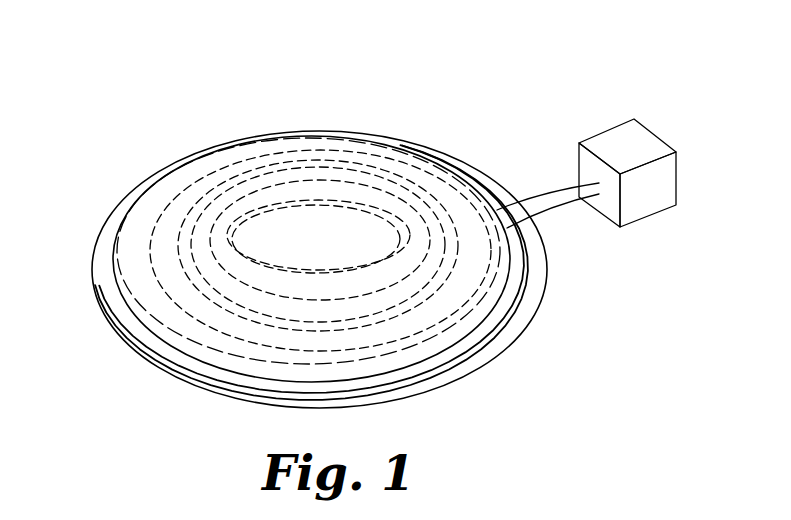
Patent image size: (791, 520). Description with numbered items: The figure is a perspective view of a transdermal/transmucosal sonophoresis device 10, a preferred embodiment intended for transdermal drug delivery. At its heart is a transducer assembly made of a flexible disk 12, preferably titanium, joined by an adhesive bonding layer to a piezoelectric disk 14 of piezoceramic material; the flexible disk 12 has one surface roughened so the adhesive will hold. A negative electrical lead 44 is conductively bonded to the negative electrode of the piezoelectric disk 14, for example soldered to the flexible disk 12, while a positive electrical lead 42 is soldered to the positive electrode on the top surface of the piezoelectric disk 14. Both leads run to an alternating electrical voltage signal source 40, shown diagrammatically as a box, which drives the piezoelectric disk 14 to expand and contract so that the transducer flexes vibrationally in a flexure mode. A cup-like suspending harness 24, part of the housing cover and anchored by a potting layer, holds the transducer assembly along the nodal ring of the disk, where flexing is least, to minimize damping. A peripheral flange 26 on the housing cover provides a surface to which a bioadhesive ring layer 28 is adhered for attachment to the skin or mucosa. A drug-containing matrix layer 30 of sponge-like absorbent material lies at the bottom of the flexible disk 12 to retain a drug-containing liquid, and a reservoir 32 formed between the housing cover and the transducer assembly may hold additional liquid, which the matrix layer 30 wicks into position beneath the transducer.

The device 10 is at (157, 97).
The flexible disk 12 is at (158, 234).
The piezoelectric disk 14 is at (200, 225).
The cup-like suspending harness 24 is at (246, 274).
The peripheral flange 26 is at (513, 317).
The bioadhesive ring layer 28 is at (427, 390).
The drug-containing matrix layer 30 is at (240, 364).
The reservoir 32 is at (333, 134).
The alternating electrical voltage signal source 40 is at (648, 138).
The positive electrical lead 42 is at (539, 195).
The negative electrical lead 44 is at (566, 205).